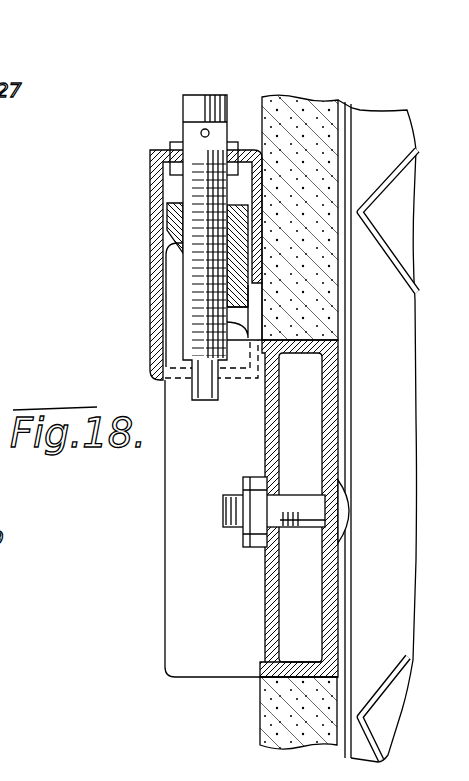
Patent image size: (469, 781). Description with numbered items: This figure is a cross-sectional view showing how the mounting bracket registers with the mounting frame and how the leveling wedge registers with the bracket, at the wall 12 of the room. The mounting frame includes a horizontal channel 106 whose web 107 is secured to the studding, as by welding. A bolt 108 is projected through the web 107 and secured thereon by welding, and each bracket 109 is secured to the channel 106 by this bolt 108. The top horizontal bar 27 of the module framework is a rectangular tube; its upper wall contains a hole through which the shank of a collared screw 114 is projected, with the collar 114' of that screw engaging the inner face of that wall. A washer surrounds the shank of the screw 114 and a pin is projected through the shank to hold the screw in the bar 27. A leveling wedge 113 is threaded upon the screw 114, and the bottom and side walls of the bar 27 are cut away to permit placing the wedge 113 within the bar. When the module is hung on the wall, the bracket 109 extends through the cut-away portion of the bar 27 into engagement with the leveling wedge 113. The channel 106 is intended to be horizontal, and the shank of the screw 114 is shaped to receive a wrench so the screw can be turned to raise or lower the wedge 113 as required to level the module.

The wall 12 is at (270, 723).
The top horizontal bar 27 is at (150, 277).
The horizontal channel 106 is at (300, 658).
The web 107 is at (322, 442).
The bolt 108 is at (304, 527).
The bracket 109 is at (182, 588).
The leveling wedge 113 is at (167, 218).
The collared screw 114 is at (189, 222).
The collar 114' is at (160, 157).